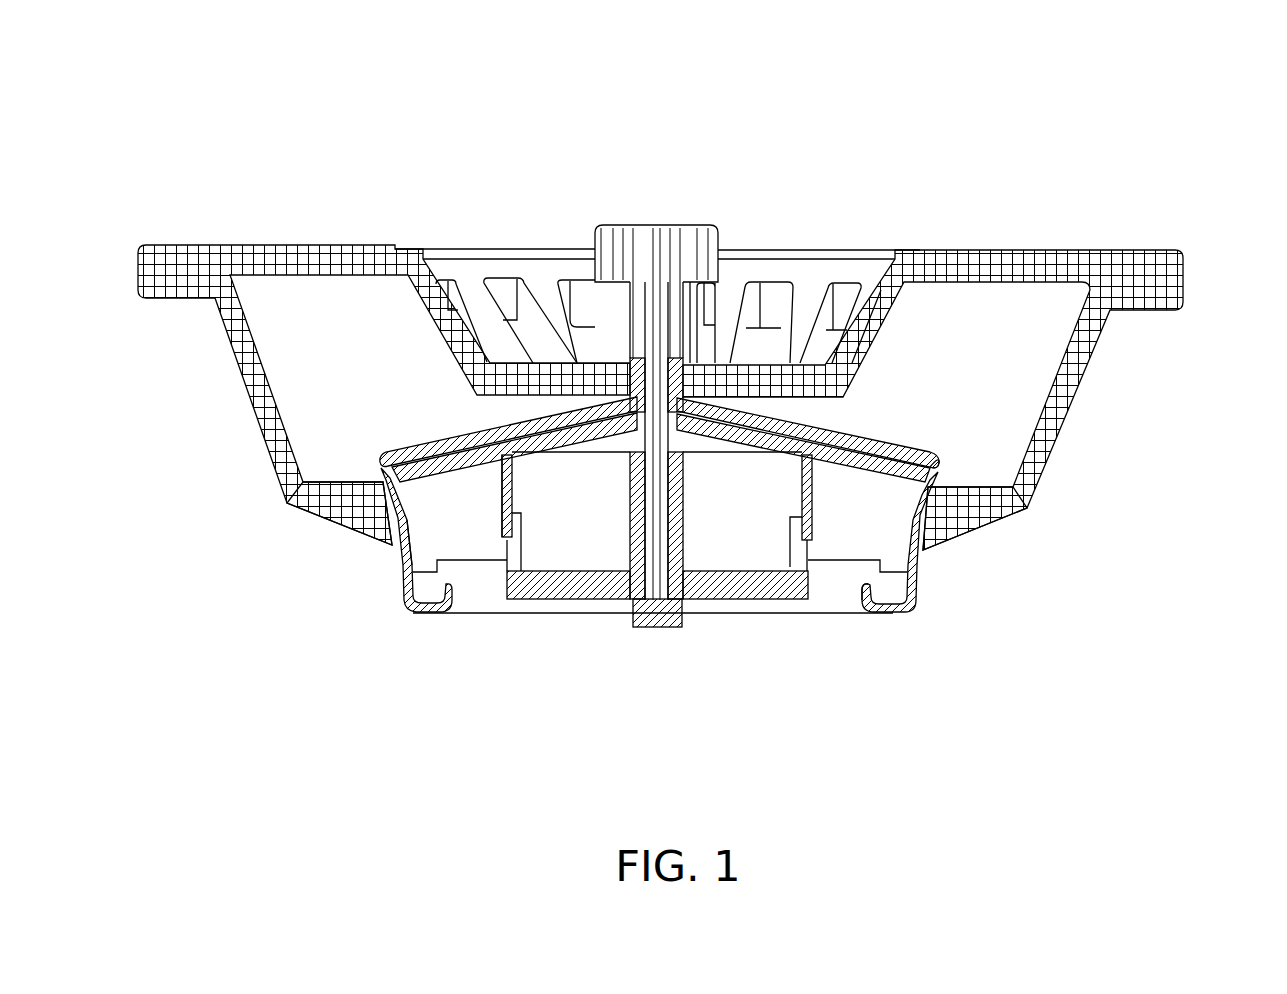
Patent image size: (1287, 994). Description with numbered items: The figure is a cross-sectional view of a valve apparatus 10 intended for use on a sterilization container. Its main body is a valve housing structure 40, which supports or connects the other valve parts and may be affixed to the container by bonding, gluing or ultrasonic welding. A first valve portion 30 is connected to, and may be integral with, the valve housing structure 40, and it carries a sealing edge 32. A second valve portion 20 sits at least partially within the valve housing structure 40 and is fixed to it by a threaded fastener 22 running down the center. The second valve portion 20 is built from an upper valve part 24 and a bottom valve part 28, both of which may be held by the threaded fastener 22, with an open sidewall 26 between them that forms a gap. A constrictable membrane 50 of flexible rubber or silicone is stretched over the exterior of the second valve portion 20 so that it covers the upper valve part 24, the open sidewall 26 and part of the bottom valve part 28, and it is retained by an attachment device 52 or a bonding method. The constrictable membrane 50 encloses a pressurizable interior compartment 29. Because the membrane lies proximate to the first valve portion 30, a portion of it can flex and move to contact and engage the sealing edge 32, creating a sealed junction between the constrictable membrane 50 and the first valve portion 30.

The valve apparatus 10 is at (1095, 121).
The second valve portion 20 is at (510, 547).
The threaded fastener 22 is at (676, 248).
The upper valve part 24 is at (360, 533).
The open sidewall 26 is at (463, 522).
The bottom valve part 28 is at (522, 600).
The pressurizable interior compartment 29 is at (592, 513).
The first valve portion 30 is at (943, 528).
The sealing edge 32 is at (927, 517).
The valve housing structure 40 is at (1185, 250).
The constrictable membrane 50 is at (915, 568).
The attachment device 52 is at (857, 583).